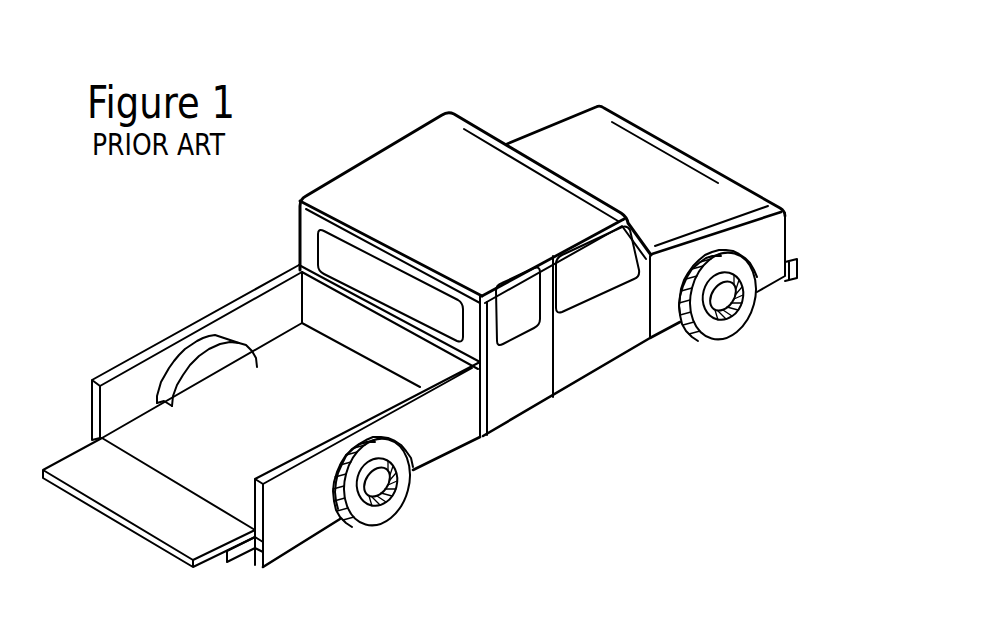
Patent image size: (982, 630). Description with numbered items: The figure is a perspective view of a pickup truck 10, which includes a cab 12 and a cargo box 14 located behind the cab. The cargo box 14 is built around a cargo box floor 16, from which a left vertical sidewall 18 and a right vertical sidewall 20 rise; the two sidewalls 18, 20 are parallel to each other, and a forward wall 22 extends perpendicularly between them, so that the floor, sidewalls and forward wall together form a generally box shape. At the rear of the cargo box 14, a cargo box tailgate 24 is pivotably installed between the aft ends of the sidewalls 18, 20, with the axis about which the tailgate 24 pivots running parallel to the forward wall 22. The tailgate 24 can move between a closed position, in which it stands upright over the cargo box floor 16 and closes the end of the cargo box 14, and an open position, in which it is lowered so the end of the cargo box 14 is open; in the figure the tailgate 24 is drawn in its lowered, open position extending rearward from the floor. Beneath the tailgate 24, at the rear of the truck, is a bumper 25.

The pickup truck 10 is at (580, 90).
The cab 12 is at (405, 123).
The cargo box 14 is at (318, 534).
The cargo box floor 16 is at (312, 412).
The left vertical sidewall 18 is at (133, 387).
The right vertical sidewall 20 is at (440, 437).
The forward wall 22 is at (295, 291).
The cargo box tailgate 24 is at (67, 467).
The bumper 25 is at (249, 556).